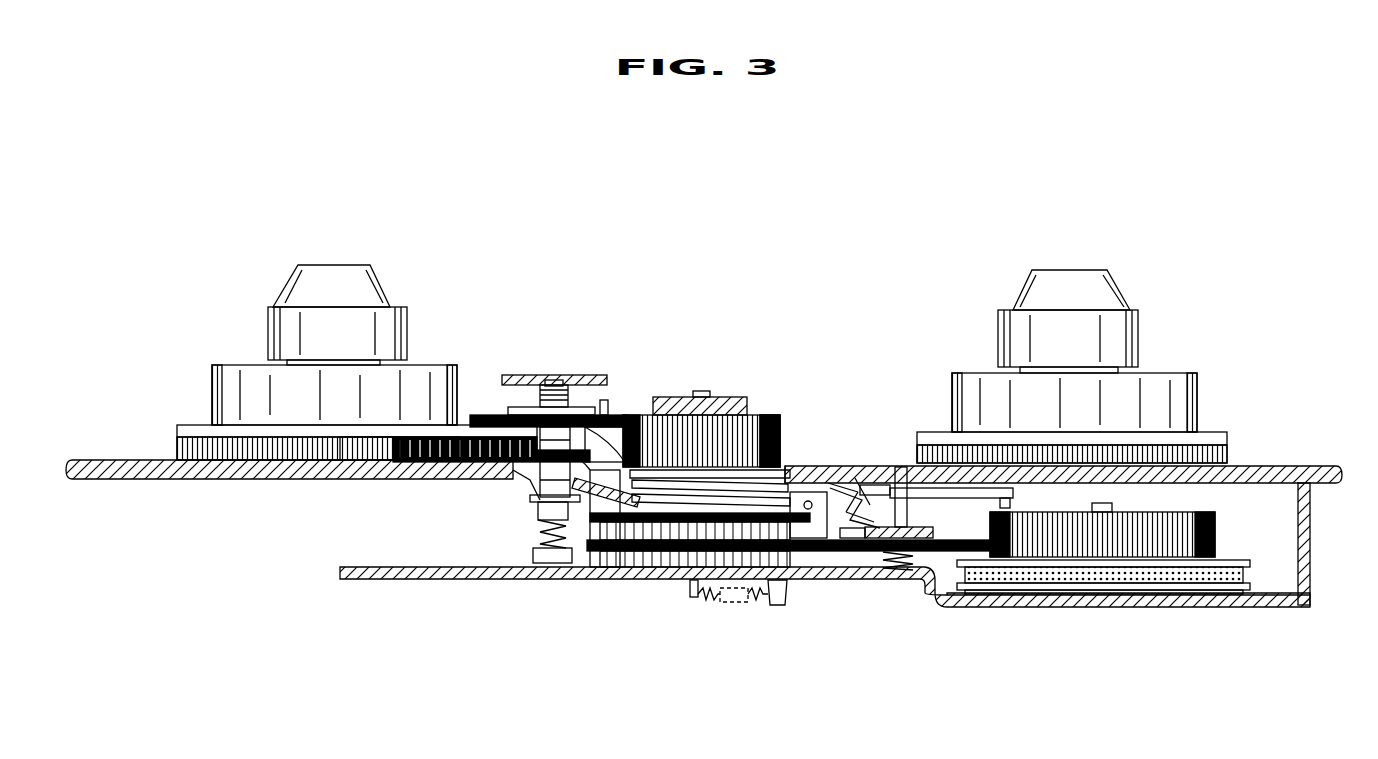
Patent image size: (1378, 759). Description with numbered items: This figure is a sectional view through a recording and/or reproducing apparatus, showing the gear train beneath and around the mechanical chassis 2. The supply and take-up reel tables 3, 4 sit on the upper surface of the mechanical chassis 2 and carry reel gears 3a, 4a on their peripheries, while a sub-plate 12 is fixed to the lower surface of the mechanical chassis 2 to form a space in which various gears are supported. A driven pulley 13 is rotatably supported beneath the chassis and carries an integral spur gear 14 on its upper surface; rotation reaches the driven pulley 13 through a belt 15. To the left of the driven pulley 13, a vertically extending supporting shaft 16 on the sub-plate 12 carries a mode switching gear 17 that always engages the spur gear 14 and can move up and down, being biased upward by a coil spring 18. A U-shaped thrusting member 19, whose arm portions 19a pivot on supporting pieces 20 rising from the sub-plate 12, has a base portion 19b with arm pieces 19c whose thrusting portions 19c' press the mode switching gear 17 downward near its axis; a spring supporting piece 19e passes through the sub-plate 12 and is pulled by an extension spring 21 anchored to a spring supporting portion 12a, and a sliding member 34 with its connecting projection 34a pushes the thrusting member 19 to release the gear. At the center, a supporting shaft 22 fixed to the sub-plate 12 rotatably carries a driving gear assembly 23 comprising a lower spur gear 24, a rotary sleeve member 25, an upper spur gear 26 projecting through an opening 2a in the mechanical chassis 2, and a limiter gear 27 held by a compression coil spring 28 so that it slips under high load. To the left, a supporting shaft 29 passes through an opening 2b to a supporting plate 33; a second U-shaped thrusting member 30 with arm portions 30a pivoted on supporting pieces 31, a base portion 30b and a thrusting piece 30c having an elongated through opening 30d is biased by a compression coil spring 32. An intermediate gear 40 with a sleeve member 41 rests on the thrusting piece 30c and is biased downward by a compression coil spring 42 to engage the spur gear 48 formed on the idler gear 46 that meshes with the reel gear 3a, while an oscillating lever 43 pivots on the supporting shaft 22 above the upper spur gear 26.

The mechanical chassis 2 is at (1270, 470).
The opening 2a is at (803, 372).
The opening 2b is at (517, 470).
The supply reel table 3 is at (212, 380).
The reel gear 3a is at (180, 452).
The take-up reel table 4 is at (1197, 395).
The reel gear 4a is at (1227, 450).
The sub-plate 12 is at (1093, 607).
The spring supporting portion 12a is at (695, 597).
The driven pulley 13 is at (1228, 592).
The spur gear 14 is at (1215, 530).
The belt 15 is at (1250, 578).
The supporting shaft 16 is at (905, 467).
The mode switching gear 17 is at (880, 552).
The coil spring 18 is at (918, 583).
The thrusting member 19 is at (880, 480).
The arm portions 19a is at (833, 470).
The base portion 19b is at (850, 475).
The arm pieces 19c is at (848, 580).
The thrusting portion 19c' is at (932, 372).
The spring supporting piece 19e is at (785, 605).
The supporting pieces 20 is at (825, 470).
The extension spring 21 is at (752, 602).
The supporting shaft 22 is at (695, 415).
The driving gear assembly 23 is at (640, 415).
The lower spur gear 24 is at (700, 556).
The rotary sleeve member 25 is at (665, 525).
The upper spur gear 26 is at (770, 415).
The limiter gear 27 is at (680, 530).
The compression coil spring 28 is at (650, 505).
The supporting shaft 29 is at (555, 385).
The thrusting member 30 is at (510, 500).
The arm portions 30a is at (583, 520).
The base portion 30b is at (620, 430).
The thrusting piece 30c is at (515, 500).
The elongated through opening 30d is at (520, 490).
The supporting pieces 31 is at (595, 540).
The compression coil spring 32 is at (520, 580).
The supporting plate 33 is at (510, 375).
The sliding member 34 is at (982, 488).
The connecting projection 34a is at (1008, 503).
The intermediate gear 40 is at (600, 410).
The sleeve member 41 is at (605, 400).
The compression coil spring 42 is at (530, 375).
The oscillating lever 43 is at (740, 397).
The idler gear 46 is at (435, 480).
The spur gear 48 is at (370, 480).